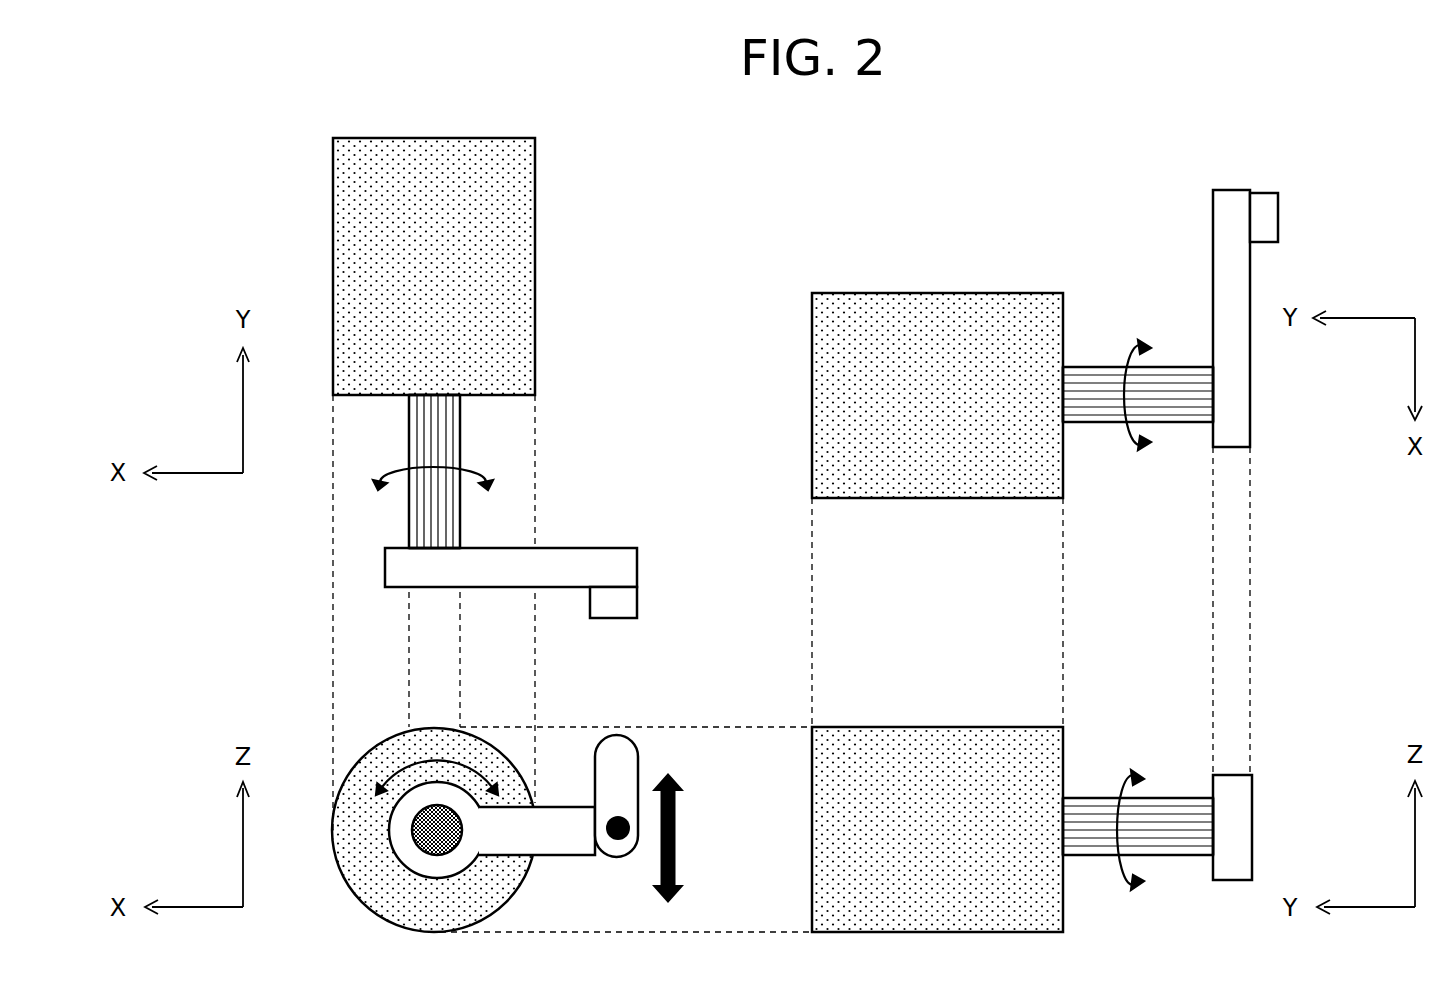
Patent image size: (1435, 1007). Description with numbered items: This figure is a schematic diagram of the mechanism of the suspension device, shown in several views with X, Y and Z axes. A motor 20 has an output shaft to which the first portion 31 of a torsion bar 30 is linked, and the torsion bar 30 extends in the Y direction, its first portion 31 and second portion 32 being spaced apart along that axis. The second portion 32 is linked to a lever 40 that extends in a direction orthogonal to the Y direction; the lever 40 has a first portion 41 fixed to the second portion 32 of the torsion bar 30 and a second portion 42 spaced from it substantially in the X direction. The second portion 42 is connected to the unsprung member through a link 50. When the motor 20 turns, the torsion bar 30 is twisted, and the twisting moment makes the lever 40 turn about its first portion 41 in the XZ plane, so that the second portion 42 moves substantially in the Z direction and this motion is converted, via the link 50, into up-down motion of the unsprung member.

The motor 20 is at (333, 252).
The torsion bar 30 is at (409, 432).
The first portion 31 is at (460, 400).
The second portion 32 is at (460, 538).
The lever 40 is at (575, 548).
The first portion 41 is at (455, 860).
The second portion 42 is at (608, 857).
The link 50 is at (637, 607).